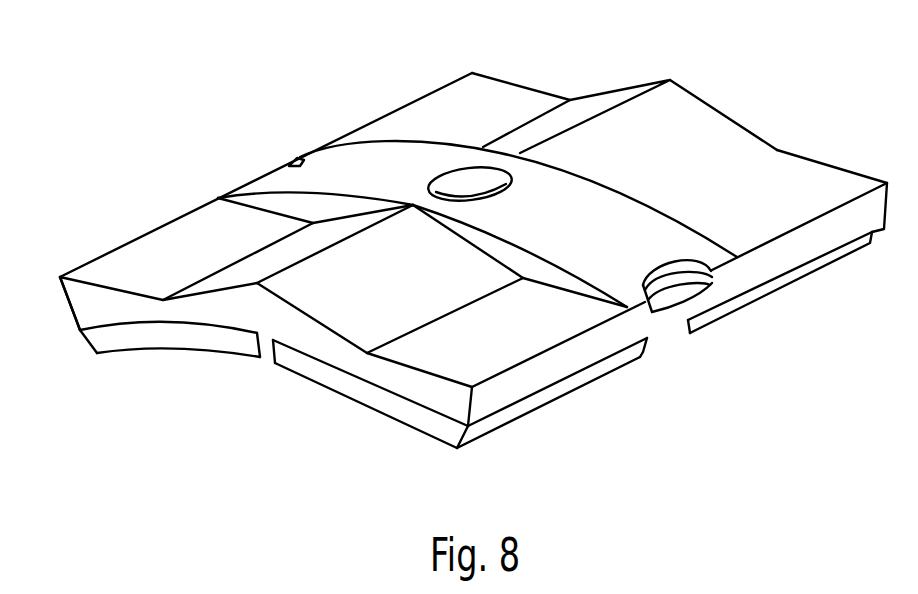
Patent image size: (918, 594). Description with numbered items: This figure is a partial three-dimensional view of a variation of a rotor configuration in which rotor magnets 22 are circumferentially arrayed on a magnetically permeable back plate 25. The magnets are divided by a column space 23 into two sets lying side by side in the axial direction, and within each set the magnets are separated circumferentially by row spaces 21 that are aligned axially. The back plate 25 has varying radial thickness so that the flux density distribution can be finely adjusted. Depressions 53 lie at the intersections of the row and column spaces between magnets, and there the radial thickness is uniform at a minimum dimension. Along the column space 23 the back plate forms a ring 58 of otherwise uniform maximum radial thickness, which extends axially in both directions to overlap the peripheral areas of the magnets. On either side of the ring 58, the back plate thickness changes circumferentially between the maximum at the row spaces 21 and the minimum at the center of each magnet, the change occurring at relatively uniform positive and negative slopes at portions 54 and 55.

The row space 21 is at (270, 364).
The rotor magnet 22 is at (580, 388).
The column space 23 is at (670, 343).
The back plate 25 is at (68, 308).
The depression 53 is at (472, 190).
The portion 54 is at (727, 117).
The portion 55 is at (607, 92).
The ring 58 is at (605, 203).